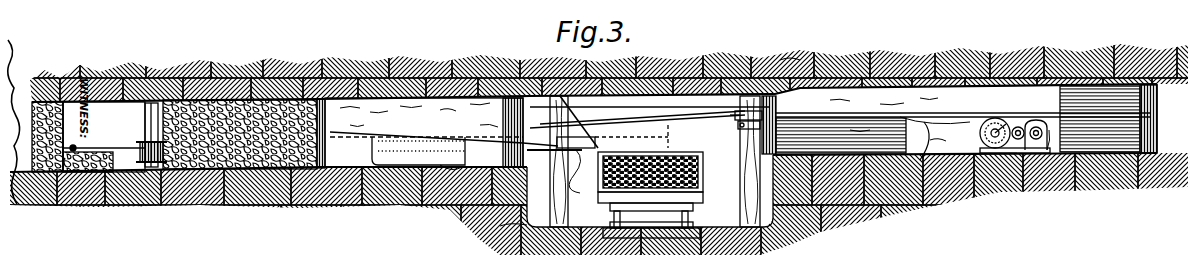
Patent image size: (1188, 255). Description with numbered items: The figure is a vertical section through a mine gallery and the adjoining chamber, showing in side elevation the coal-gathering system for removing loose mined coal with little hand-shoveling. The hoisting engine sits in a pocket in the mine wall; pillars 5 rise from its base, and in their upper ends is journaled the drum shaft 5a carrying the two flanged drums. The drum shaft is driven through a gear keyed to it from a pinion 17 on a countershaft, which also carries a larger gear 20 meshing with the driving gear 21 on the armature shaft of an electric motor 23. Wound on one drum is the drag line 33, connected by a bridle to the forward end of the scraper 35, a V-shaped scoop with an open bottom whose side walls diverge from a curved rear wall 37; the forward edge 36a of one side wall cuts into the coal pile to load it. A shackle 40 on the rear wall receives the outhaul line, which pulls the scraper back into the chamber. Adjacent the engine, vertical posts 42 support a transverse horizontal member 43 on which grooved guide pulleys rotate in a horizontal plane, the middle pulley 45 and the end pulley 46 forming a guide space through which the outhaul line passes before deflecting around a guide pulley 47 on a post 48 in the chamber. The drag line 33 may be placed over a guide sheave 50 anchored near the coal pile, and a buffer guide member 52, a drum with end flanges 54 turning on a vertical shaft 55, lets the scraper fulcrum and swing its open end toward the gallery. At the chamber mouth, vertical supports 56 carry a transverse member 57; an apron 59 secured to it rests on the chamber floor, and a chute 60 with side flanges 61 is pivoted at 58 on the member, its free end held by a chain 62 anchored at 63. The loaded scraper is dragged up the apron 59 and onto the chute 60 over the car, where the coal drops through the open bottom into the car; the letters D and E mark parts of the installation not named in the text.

The pillars 5 is at (986, 116).
The drum shaft 5a is at (935, 135).
The pinion 17 is at (997, 126).
The gear 20 is at (1004, 154).
The driving gear 21 is at (1040, 118).
The electric motor 23 is at (1039, 156).
The drag line 33 is at (922, 162).
The scraper 35 is at (395, 180).
The forward edge 36a is at (454, 180).
The curved rear wall 37 is at (470, 135).
The shackle 40 is at (424, 132).
The vertical posts 42 is at (746, 198).
The transverse horizontal member 43 is at (740, 128).
The middle guide pulley 45 is at (734, 115).
The end guide pulley 46 is at (790, 60).
The guide pulley 47 is at (398, 151).
The post 48 is at (314, 170).
The guide sheave 50 is at (69, 174).
The buffer guide member 52 is at (150, 134).
The end flanges 54 is at (150, 172).
The shaft 55 is at (155, 100).
The vertical supports 56 is at (528, 224).
The transverse member 57 is at (555, 179).
The pivot 58 is at (564, 224).
The apron 59 is at (548, 161).
The chute 60 is at (612, 119).
The side flanges 61 is at (604, 145).
The chain 62 is at (580, 120).
The anchor 63 is at (570, 96).
The dynamo D is at (704, 170).
The base E is at (651, 220).